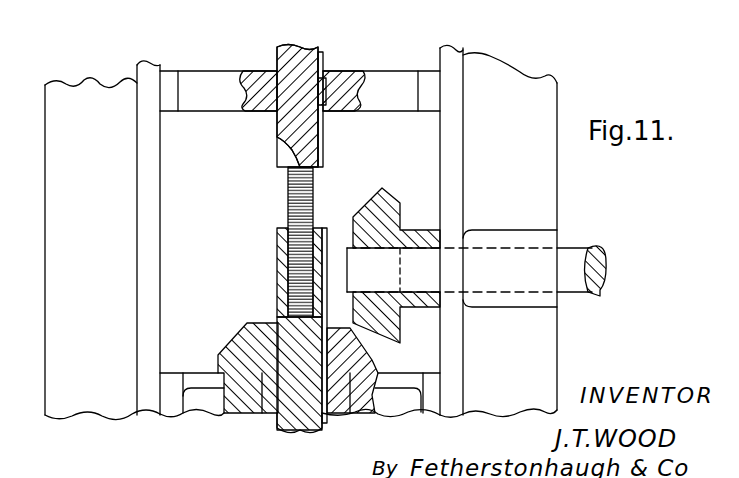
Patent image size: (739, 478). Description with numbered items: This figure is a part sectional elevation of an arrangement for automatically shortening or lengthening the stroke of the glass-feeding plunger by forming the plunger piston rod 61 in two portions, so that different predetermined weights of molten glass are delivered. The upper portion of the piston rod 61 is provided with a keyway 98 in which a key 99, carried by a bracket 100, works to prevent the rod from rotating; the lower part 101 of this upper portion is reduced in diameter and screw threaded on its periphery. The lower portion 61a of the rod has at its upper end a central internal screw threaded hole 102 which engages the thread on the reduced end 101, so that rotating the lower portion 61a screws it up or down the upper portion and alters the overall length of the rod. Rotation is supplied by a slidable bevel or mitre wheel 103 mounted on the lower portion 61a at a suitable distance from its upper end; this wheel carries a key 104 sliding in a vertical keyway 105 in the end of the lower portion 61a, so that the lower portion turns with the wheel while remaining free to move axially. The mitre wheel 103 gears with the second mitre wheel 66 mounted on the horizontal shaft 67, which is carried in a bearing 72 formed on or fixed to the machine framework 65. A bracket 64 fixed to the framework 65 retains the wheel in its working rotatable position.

The machine framework 65 is at (301, 232).
The bracket 100 is at (300, 91).
The key 99 is at (340, 77).
The keyway 98 is at (323, 140).
The plunger piston rod 61 is at (277, 151).
The reduced screw-threaded lower part of upper piston rod portion 101 is at (288, 205).
The lower portion of piston rod 61a is at (277, 272).
The central internal screw threaded hole 102 is at (287, 300).
The key 104 is at (323, 423).
The vertical keyway 105 is at (327, 229).
The second mitre wheel 66 is at (397, 199).
The horizontal shaft 67 is at (587, 247).
The bearing 72 is at (541, 305).
The slidable bevel or mitre wheel 103 is at (357, 357).
The bracket 64 is at (175, 391).